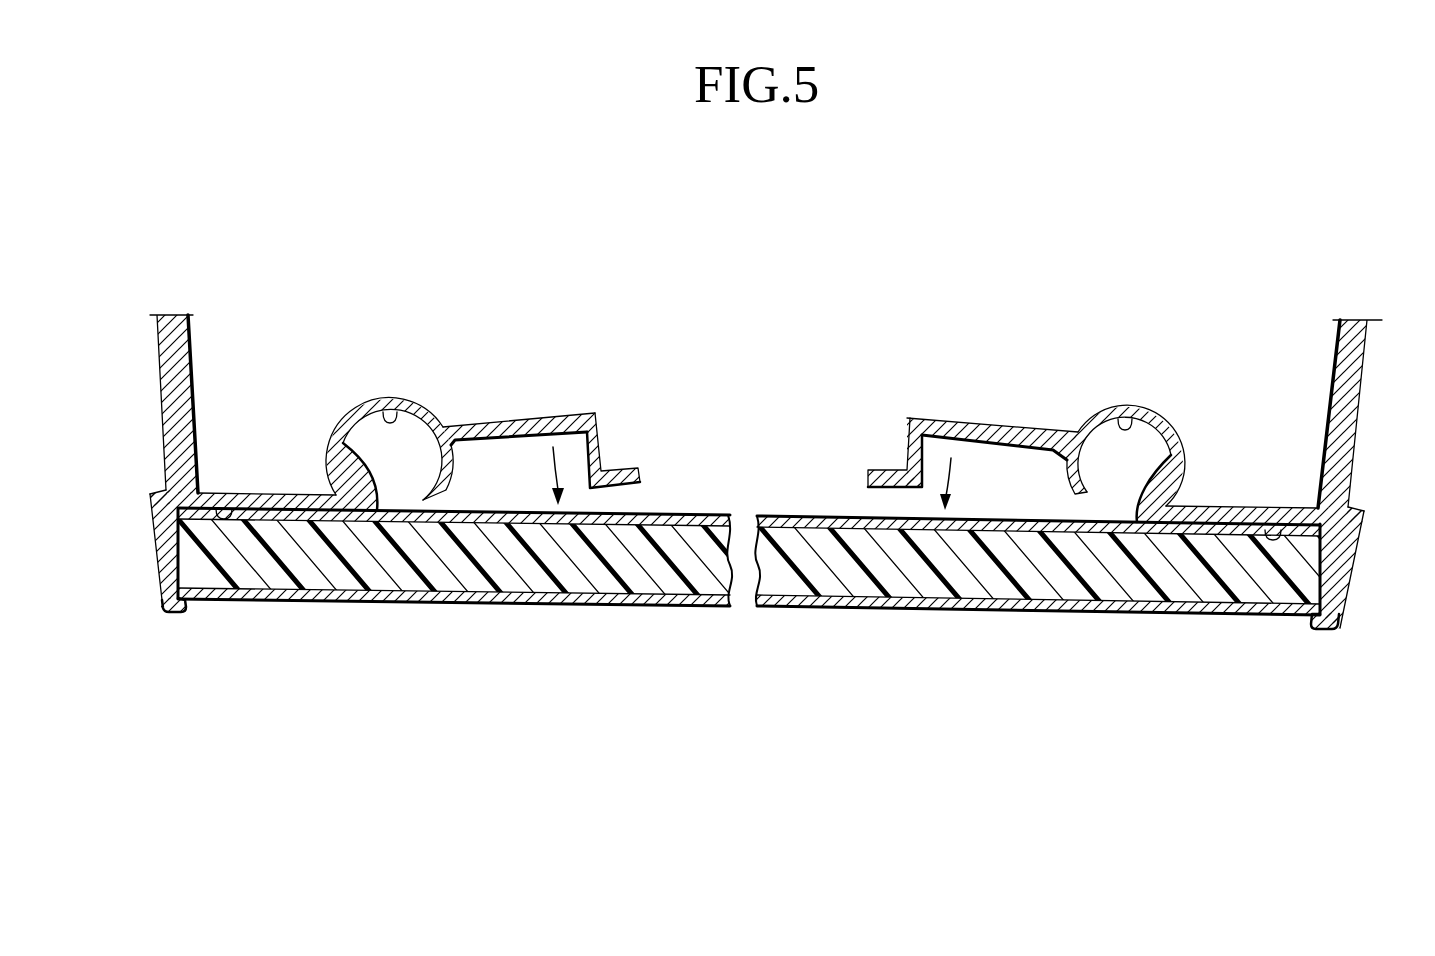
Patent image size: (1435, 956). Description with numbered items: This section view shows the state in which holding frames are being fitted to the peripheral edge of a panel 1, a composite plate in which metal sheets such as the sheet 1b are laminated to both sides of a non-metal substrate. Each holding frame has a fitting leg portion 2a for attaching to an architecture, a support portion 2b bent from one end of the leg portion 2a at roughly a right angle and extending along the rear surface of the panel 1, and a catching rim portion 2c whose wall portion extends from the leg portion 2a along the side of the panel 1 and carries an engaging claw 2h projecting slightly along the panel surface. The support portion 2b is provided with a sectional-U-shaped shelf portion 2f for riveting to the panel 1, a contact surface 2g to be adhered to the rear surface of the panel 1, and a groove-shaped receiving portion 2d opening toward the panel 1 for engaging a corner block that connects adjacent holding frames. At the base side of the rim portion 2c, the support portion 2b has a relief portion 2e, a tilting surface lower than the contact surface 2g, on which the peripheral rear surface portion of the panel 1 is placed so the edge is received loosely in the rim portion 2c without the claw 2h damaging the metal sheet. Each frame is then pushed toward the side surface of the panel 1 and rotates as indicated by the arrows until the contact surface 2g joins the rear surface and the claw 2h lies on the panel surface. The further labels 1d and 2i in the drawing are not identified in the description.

The panel 1 is at (872, 626).
The metal sheet 1b is at (663, 608).
The upper surface layer of board 1d is at (703, 512).
The fitting leg portion 2a is at (160, 377).
The support portion 2b is at (483, 408).
The catching rim portion 2c is at (157, 565).
The receiving portion 2d is at (394, 410).
The relief portion 2e is at (223, 506).
The shelf portion 2f is at (537, 412).
The contact surface 2g is at (347, 433).
The engaging claw 2h is at (187, 610).
The shoulder 2i is at (150, 510).